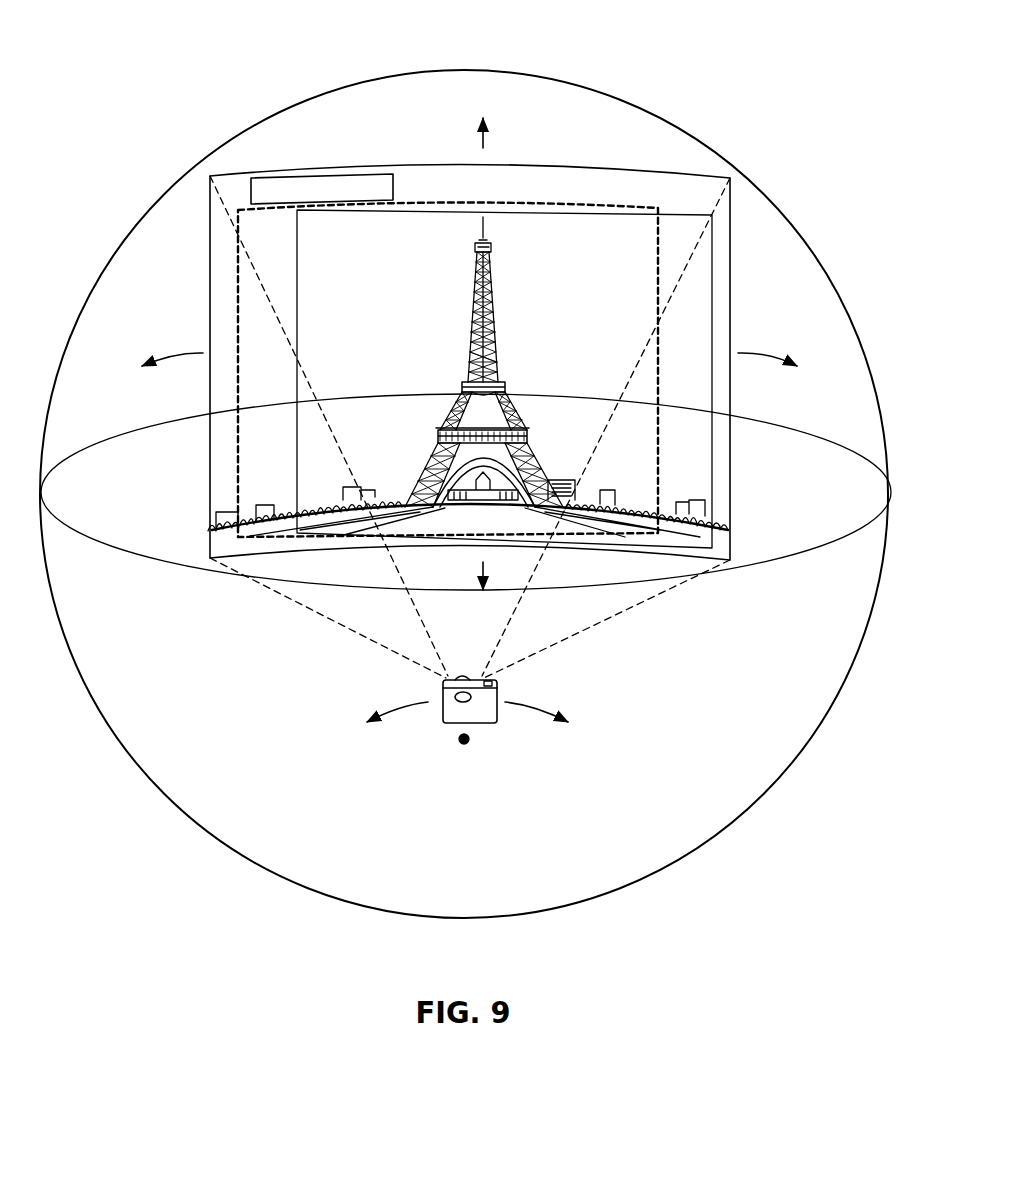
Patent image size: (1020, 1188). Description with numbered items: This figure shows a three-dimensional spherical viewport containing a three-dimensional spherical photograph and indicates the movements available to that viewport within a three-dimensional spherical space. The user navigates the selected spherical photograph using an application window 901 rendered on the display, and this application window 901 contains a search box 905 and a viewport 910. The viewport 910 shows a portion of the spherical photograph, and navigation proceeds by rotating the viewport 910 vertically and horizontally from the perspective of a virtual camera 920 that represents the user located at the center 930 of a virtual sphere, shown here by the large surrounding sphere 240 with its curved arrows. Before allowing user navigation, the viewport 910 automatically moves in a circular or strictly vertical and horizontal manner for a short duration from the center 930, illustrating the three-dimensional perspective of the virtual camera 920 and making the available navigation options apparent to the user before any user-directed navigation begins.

The spherical display environment 240 is at (790, 207).
The application window 901 is at (617, 171).
The search box 905 is at (321, 172).
The viewport 910 is at (527, 202).
The virtual camera 920 is at (438, 728).
The center of a virtual sphere 930 is at (478, 751).